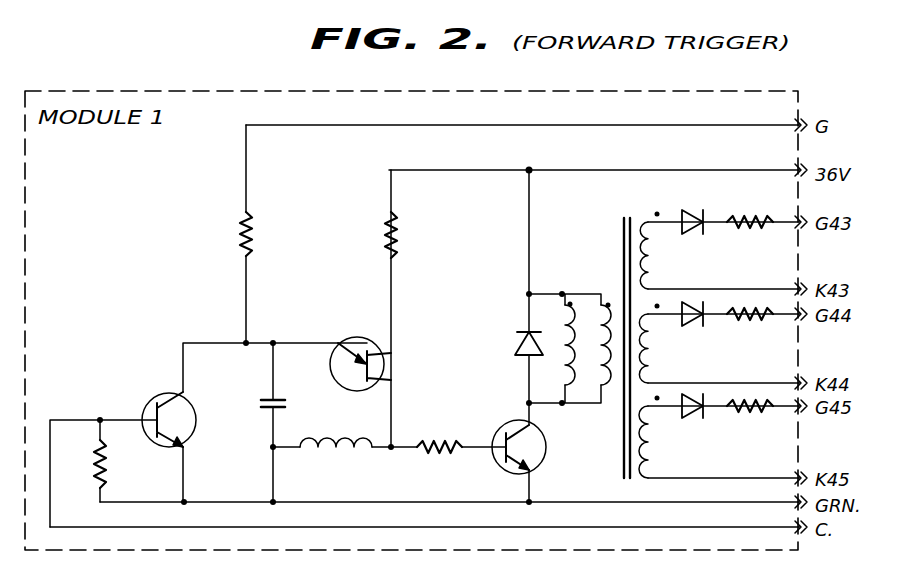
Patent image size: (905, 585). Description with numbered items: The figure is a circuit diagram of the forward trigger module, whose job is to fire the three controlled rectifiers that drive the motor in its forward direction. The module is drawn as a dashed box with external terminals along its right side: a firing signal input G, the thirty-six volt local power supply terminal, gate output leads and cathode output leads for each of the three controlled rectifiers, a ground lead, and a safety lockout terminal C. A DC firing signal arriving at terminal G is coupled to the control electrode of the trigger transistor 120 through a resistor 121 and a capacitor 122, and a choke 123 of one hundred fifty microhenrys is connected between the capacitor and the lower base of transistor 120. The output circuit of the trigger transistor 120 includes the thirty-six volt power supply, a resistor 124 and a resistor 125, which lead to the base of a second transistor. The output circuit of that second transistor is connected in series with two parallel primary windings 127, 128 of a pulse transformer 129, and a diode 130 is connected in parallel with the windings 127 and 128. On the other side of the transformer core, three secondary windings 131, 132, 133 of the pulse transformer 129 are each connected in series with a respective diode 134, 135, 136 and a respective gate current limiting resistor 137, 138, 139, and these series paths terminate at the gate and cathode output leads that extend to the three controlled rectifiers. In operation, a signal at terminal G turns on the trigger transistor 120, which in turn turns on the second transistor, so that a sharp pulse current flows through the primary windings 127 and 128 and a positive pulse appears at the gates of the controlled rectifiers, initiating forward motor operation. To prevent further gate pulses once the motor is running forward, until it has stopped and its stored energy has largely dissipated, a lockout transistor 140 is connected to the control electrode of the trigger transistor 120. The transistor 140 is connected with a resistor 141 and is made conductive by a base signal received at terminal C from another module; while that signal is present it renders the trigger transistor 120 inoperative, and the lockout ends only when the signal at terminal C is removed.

The trigger transistor 120 is at (360, 338).
The resistor 121 is at (243, 238).
The capacitor 122 is at (268, 402).
The choke 123 is at (344, 438).
The resistor 124 is at (387, 236).
The resistor 125 is at (447, 432).
The primary winding 127 is at (570, 358).
The primary winding 128 is at (606, 360).
The pulse transformer 129 is at (609, 292).
The diode 130 is at (514, 346).
The secondary winding 131 is at (648, 258).
The secondary winding 132 is at (652, 354).
The secondary winding 133 is at (650, 448).
The diode 134 is at (692, 228).
The diode 135 is at (694, 320).
The diode 136 is at (694, 418).
The gate current limiting resistor 137 is at (754, 230).
The gate current limiting resistor 138 is at (756, 320).
The gate current limiting resistor 139 is at (756, 414).
The transistor 140 is at (150, 400).
The resistor 141 is at (96, 468).